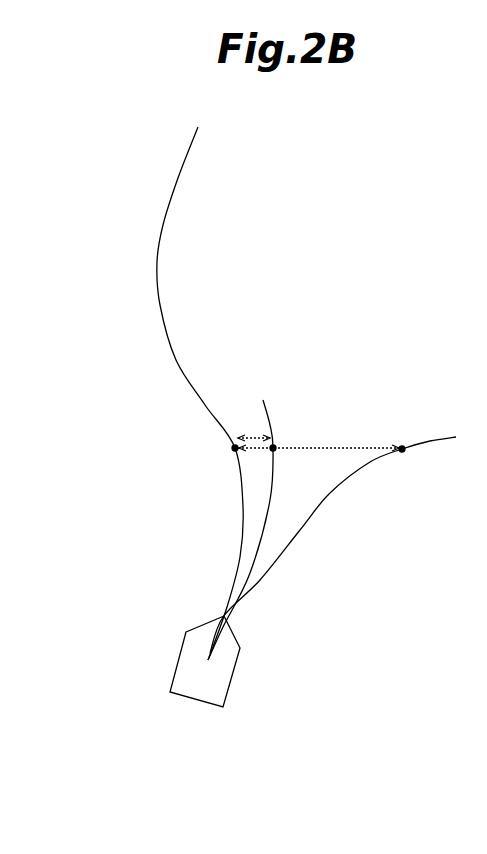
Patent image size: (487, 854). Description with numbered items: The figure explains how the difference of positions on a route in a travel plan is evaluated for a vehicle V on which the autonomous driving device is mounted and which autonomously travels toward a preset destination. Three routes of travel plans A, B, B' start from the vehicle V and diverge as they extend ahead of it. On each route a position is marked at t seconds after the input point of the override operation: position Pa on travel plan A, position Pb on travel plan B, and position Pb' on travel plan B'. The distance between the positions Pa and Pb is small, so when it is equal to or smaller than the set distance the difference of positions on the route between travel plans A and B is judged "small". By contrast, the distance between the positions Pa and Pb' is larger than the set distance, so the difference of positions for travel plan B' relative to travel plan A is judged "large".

The travel plan A is at (159, 262).
The travel plan B is at (267, 530).
The travel plan B' is at (333, 545).
The position Pa is at (214, 446).
The position Pb is at (292, 433).
The position Pb' is at (402, 433).
The vehicle V is at (192, 700).